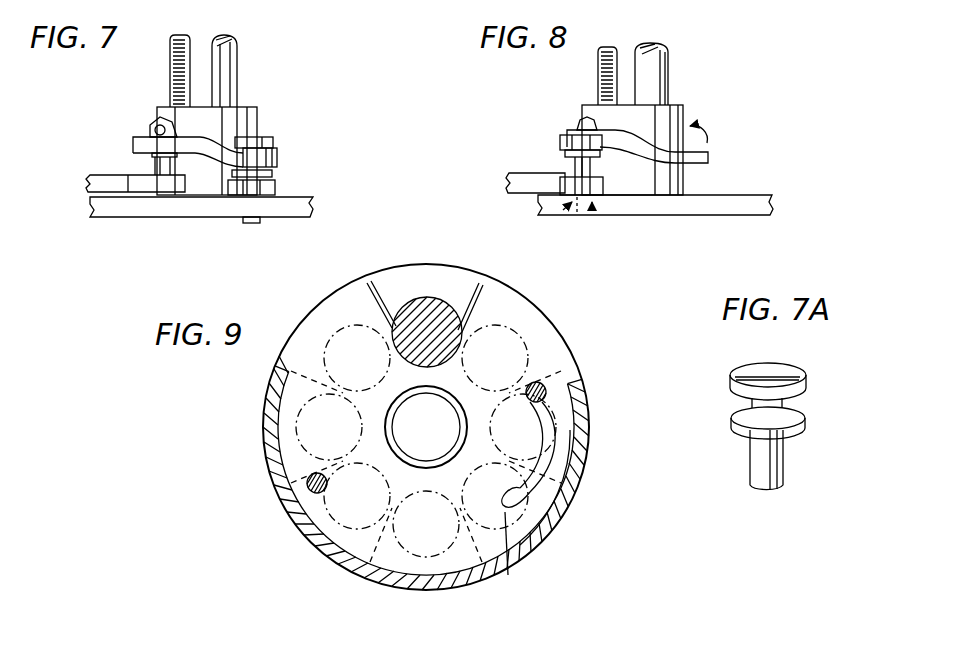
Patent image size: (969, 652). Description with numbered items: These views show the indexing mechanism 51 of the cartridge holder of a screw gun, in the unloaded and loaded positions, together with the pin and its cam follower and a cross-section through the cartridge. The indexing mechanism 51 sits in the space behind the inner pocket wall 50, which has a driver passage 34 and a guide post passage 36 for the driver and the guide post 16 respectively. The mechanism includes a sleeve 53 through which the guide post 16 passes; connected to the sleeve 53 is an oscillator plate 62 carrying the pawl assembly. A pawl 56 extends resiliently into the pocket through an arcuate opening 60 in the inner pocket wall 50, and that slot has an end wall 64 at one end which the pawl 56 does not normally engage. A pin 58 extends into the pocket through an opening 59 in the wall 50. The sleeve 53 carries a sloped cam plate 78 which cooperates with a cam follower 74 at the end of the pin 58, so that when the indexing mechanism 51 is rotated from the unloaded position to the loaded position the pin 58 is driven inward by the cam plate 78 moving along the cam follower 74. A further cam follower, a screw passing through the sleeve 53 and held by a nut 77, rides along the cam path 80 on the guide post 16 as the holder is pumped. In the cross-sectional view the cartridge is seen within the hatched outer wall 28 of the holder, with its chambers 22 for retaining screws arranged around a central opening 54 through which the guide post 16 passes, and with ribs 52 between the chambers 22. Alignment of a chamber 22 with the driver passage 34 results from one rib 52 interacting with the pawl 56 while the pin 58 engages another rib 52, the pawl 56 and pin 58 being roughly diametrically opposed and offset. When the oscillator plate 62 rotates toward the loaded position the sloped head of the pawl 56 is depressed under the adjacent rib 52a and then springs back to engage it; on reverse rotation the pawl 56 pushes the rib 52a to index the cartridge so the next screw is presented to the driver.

In FIG. 7, the guide post 16 is at (237, 50).
In FIG. 8, the guide post 16 is at (668, 62).
In FIG. 9, the chamber 22 is at (303, 318).
In FIG. 9, the housing wall 28 is at (270, 393).
In FIG. 9, the driver passage 34 is at (422, 297).
In FIG. 7, the guide post passage 36 is at (247, 107).
In FIG. 8, the guide post passage 36 is at (678, 100).
In FIG. 9, the guide post passage 36 is at (390, 422).
In FIG. 7, the inner pocket wall 50 is at (290, 203).
In FIG. 8, the inner pocket wall 50 is at (755, 203).
In FIG. 7, the indexing mechanism 51 is at (307, 147).
In FIG. 8, the indexing mechanism 51 is at (542, 112).
In FIG. 9, the rib 52 is at (487, 293).
In FIG. 9, the adjacent rib 52a is at (582, 473).
In FIG. 7, the sleeve 53 is at (218, 68).
In FIG. 8, the sleeve 53 is at (683, 115).
In FIG. 9, the opening 54 is at (438, 446).
In FIG. 9, the pawl 56 is at (547, 393).
In FIG. 7, the pin 58 is at (247, 222).
In FIG. 8, the pin 58 is at (612, 217).
In FIG. 7A, the pin 58 is at (772, 468).
In FIG. 9, the pin 58 is at (312, 495).
In FIG. 7, the opening 59 is at (240, 219).
In FIG. 8, the opening 59 is at (552, 218).
In FIG. 9, the arcuate opening 60 is at (547, 460).
In FIG. 7, the oscillator plate 62 is at (85, 182).
In FIG. 8, the oscillator plate 62 is at (508, 182).
In FIG. 9, the end wall 64 is at (522, 562).
In FIG. 7, the cam follower 74 is at (267, 140).
In FIG. 8, the cam follower 74 is at (567, 128).
In FIG. 7A, the cam follower 74 is at (798, 407).
In FIG. 7, the nut 77 is at (147, 125).
In FIG. 7, the sloped cam plate 78 is at (197, 167).
In FIG. 8, the sloped cam plate 78 is at (710, 157).
In FIG. 7, the cam path 80 is at (172, 68).
In FIG. 8, the cam path 80 is at (607, 77).